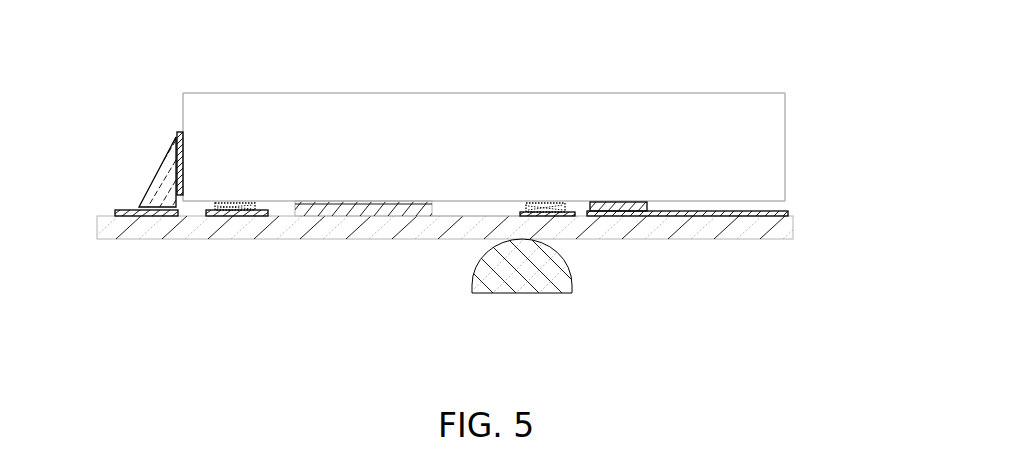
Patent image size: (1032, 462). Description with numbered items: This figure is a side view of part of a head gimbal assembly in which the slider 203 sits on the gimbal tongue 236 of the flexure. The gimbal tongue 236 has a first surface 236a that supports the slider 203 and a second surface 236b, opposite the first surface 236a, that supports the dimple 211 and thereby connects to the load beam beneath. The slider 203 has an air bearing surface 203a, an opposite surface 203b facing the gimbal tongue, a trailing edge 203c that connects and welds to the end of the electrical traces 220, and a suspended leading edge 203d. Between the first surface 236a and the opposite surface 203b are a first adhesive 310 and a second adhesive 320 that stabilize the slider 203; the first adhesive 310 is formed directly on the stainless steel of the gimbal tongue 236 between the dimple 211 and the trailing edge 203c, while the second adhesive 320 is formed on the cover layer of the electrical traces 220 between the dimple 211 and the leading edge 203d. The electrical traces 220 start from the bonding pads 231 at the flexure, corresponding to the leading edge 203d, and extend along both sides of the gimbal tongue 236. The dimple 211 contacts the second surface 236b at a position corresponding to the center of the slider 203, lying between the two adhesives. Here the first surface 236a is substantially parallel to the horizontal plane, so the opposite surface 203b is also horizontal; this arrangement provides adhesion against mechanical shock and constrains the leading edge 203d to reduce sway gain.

The slider 203 is at (505, 122).
The air bearing surface 203a is at (593, 92).
The opposite surface of the air bearing surface 203b is at (474, 200).
The trailing edge 203c is at (183, 118).
The leading edge 203d is at (786, 148).
The first adhesive 310 is at (347, 203).
The second adhesive 320 is at (614, 203).
The electrical traces 220 is at (780, 213).
The bonding pads 231 is at (135, 212).
The gimbal tongue 236 is at (285, 226).
The first surface 236a is at (448, 217).
The second surface 236b is at (367, 240).
The dimple 211 is at (535, 282).